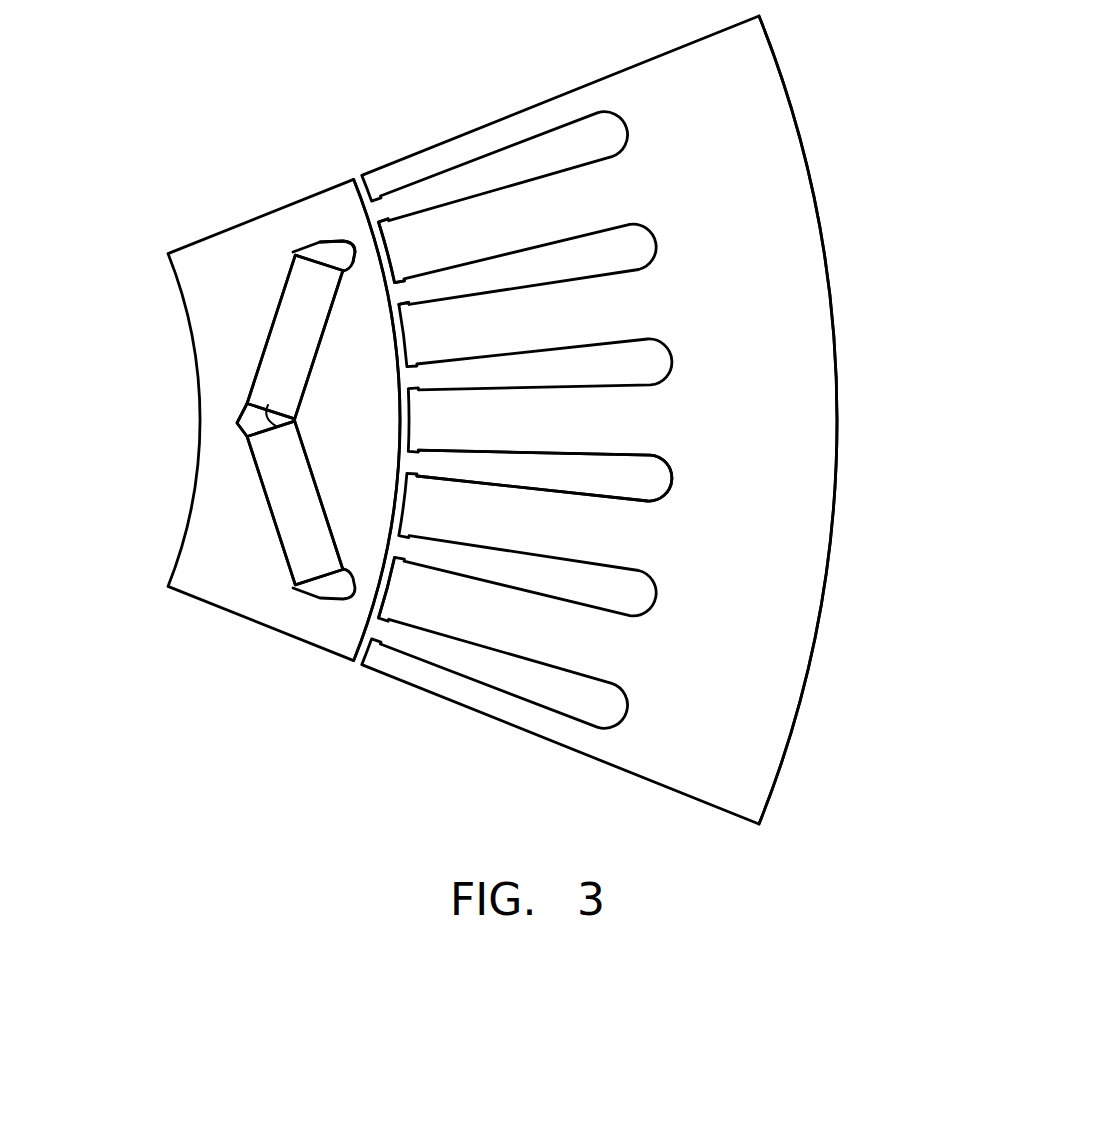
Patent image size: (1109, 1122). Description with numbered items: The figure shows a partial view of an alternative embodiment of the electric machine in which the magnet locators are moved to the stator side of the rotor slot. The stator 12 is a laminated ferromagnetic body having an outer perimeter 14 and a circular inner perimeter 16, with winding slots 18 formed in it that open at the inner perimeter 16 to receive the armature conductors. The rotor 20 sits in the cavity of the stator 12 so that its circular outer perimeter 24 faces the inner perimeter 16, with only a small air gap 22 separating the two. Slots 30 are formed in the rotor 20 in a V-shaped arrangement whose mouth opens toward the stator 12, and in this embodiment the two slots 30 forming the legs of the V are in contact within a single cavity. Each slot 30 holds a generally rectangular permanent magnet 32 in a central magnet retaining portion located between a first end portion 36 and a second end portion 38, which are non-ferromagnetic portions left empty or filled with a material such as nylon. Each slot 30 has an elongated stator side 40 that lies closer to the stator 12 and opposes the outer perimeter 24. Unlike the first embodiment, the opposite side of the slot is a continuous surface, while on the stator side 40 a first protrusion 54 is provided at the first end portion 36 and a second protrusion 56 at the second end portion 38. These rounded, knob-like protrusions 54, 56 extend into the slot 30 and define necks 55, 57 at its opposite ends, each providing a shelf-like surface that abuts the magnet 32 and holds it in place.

The stator 12 is at (765, 120).
The outer perimeter 14 is at (832, 295).
The inner perimeter 16 is at (387, 588).
The winding slots 18 is at (653, 482).
The rotor 20 is at (223, 250).
The air gap 22 is at (353, 657).
The outer perimeter 24 is at (355, 637).
The slots 30 is at (253, 362).
The permanent magnet 32 is at (280, 333).
The first end portion 36 is at (323, 253).
The second end portion 38 is at (268, 408).
The stator side 40 is at (327, 330).
The first protrusion 54 is at (347, 267).
The neck 55 is at (340, 256).
The second protrusion 56 is at (293, 425).
The neck 57 is at (238, 424).